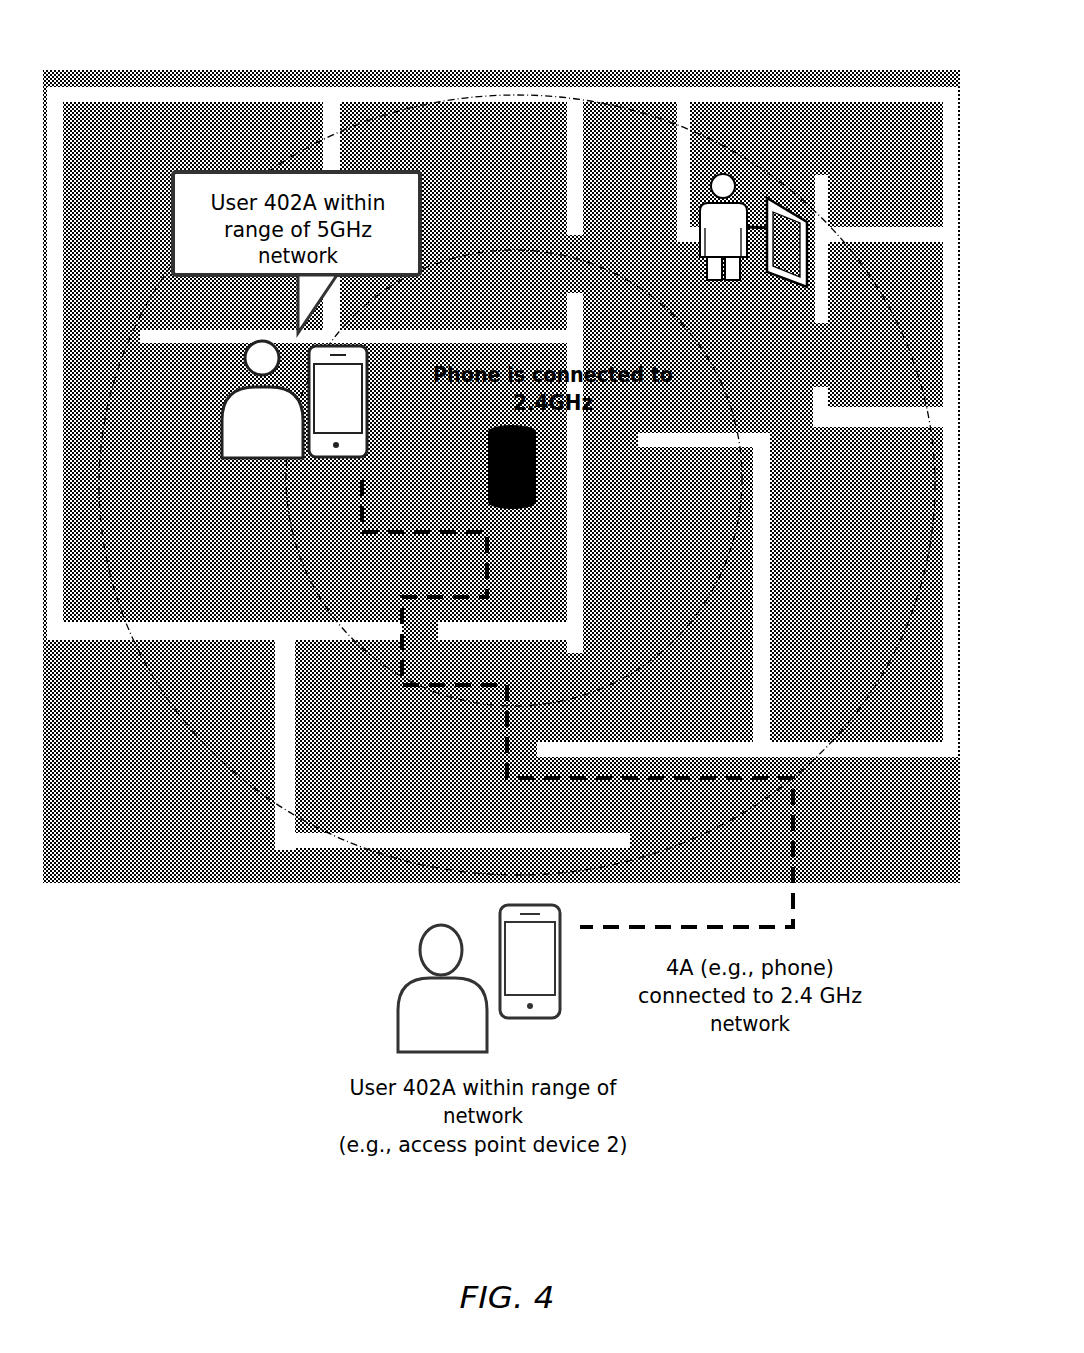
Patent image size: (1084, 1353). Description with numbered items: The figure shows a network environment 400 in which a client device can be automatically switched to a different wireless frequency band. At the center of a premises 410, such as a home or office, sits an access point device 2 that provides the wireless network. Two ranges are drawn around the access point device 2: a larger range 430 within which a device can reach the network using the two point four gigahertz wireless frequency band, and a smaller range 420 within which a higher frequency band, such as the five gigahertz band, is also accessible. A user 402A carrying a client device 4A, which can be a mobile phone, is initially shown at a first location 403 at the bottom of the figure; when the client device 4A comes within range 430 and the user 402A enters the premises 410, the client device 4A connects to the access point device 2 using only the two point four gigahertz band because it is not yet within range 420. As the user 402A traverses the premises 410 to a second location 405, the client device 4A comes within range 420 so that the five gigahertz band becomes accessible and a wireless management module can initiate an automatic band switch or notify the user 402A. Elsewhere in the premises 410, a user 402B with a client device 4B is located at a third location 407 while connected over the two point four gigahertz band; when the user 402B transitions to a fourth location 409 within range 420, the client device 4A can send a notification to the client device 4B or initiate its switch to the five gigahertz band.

The network environment 400 is at (501, 447).
The premises 410 is at (830, 73).
The range 430 is at (376, 124).
The range 420 is at (724, 384).
The user 402A is at (246, 357).
The user 402B is at (709, 258).
The client device 4A is at (367, 368).
The client device 4B is at (767, 200).
The third location 407 is at (739, 304).
The fourth location 409 is at (626, 323).
The second location 405 is at (425, 582).
The first location 403 is at (650, 806).
The access point device 2 is at (488, 452).